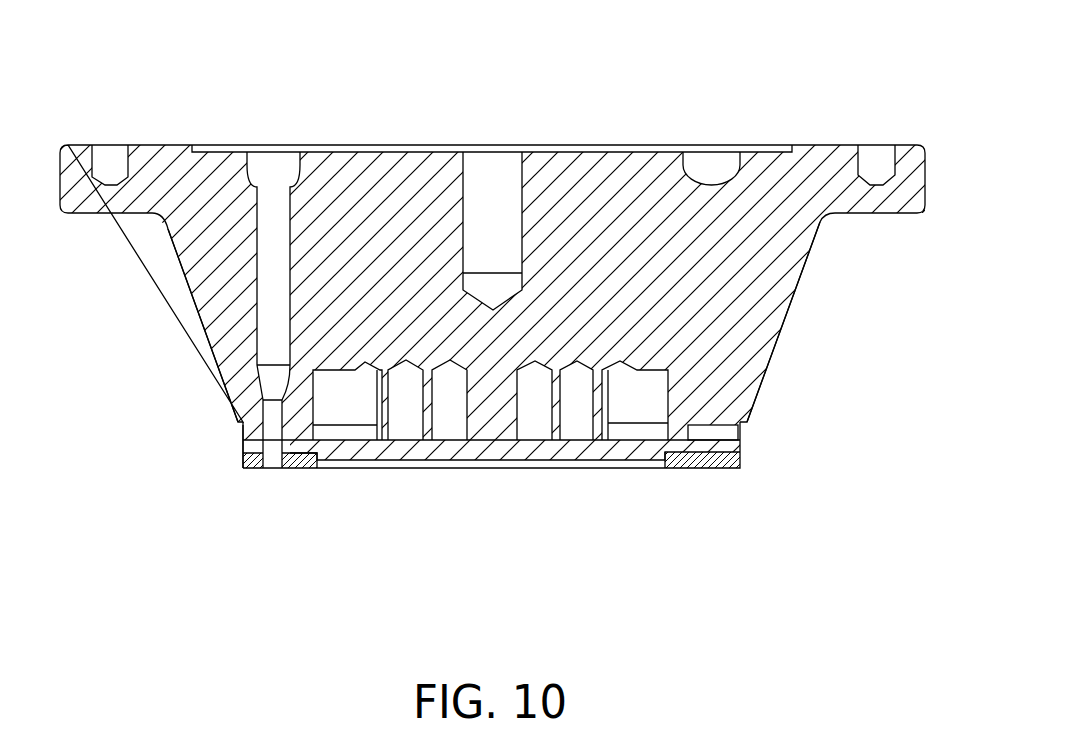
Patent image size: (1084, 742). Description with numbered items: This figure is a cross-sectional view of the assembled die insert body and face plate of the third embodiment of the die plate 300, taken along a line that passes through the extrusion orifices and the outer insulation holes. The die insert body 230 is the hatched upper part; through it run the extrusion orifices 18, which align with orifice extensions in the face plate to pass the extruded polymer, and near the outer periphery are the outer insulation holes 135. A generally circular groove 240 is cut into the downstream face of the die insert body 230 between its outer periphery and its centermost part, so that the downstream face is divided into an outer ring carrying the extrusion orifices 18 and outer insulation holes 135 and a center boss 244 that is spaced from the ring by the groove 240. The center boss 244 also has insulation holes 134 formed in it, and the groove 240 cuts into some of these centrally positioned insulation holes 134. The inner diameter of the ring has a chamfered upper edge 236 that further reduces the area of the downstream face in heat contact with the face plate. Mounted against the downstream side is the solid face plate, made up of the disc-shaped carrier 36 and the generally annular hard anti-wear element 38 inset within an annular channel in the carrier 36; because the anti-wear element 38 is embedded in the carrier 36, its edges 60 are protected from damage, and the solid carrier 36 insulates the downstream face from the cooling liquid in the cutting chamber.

The die plate 300 is at (810, 110).
The extrusion orifices 18 is at (255, 257).
The die insert body 230 is at (208, 352).
The outer insulation holes 135 is at (718, 422).
The carrier 36 is at (742, 452).
The edges 60 is at (245, 468).
The hard anti-wear element 38 is at (293, 472).
The circular groove 240 is at (348, 408).
The insulation holes 134 is at (530, 419).
The center boss 244 is at (608, 423).
The chamfered upper edge 236 is at (673, 445).